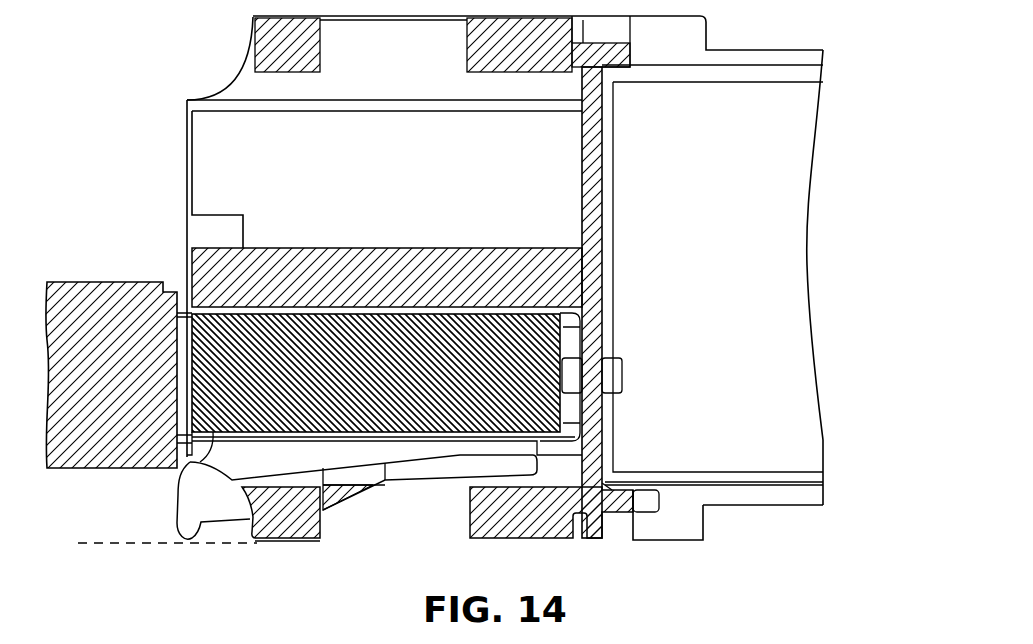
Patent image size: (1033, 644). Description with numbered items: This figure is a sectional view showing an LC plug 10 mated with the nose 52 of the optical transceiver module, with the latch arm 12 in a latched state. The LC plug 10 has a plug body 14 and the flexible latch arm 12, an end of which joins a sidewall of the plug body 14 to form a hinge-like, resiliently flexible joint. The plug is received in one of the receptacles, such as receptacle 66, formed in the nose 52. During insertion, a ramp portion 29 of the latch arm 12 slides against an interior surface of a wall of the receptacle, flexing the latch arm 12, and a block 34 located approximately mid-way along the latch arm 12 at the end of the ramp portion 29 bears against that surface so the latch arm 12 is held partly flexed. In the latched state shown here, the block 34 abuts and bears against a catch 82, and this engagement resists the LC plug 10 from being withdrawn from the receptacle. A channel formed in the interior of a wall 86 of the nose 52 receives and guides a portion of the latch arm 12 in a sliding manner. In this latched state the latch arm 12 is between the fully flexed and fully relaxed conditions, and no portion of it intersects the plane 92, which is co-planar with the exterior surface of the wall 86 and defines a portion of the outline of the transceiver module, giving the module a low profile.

The LC plug 10 is at (100, 282).
The latch arm 12 is at (215, 523).
The plug body 14 is at (198, 463).
The ramp portion 29 is at (378, 487).
The block 34 is at (352, 500).
The nose 52 is at (187, 157).
The receptacle 66 is at (416, 184).
The catch 82 is at (322, 527).
The wall 86 is at (540, 538).
The plane 92 is at (127, 545).